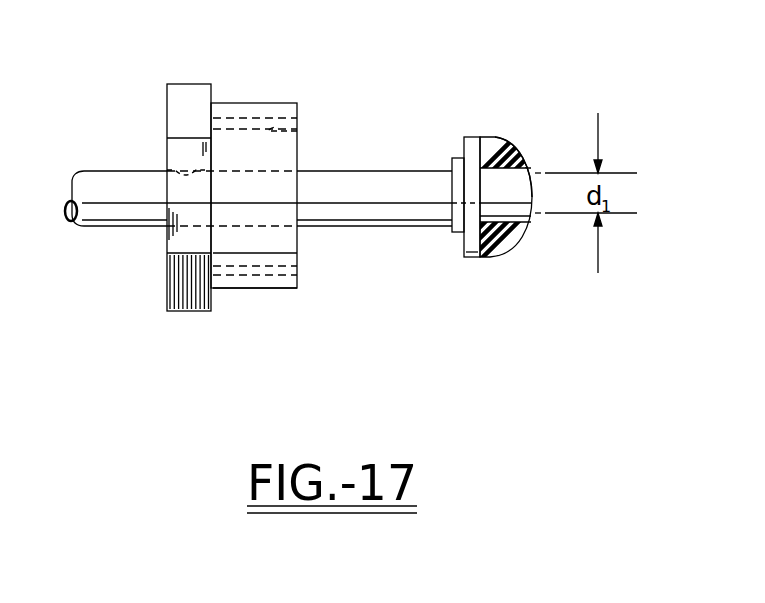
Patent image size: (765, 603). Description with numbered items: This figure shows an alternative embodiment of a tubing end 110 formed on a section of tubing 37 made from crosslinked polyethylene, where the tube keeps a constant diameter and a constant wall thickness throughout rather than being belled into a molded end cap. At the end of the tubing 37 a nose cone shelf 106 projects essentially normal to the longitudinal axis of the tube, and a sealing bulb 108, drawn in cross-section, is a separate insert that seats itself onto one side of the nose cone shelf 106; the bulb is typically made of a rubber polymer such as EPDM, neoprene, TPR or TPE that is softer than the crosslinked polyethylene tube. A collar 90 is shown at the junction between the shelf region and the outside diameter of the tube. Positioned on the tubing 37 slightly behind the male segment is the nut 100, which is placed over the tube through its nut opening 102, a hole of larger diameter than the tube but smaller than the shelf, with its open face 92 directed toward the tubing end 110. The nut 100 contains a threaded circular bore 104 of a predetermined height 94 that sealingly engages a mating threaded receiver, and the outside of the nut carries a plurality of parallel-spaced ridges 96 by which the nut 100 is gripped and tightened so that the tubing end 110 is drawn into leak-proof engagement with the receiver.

The tubing 37 is at (347, 170).
The collar 90 is at (455, 233).
The open face 92 is at (297, 268).
The predetermined height 94 is at (271, 290).
The parallel-spaced ridges 96 is at (182, 312).
The nut 100 is at (192, 68).
The nut opening 102 is at (165, 167).
The threaded circular bore 104 is at (300, 132).
The nose cone shelf 106 is at (470, 258).
The sealing bulb 108 is at (507, 251).
The tubing end 110 is at (498, 122).